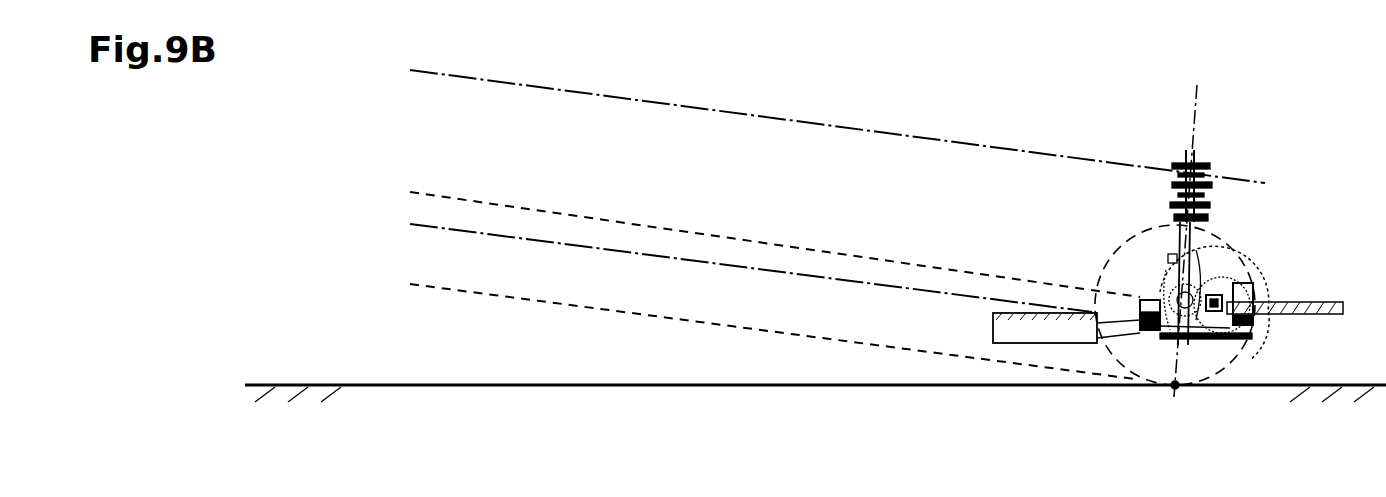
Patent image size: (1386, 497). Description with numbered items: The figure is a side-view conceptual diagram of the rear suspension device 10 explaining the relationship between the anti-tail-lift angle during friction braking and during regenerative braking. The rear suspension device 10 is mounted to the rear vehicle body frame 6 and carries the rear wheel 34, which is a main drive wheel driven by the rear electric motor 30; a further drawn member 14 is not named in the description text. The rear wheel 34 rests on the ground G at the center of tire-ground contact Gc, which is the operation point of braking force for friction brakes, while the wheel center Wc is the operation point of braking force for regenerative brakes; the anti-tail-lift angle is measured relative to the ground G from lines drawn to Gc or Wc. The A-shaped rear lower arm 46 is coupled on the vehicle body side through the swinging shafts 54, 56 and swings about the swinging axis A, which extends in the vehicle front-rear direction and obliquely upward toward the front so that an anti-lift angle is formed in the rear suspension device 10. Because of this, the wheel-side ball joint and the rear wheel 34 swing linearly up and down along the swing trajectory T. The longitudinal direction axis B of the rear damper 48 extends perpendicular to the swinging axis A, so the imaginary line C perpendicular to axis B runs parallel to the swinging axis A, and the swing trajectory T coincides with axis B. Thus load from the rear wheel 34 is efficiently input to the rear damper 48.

The rear vehicle body frame 6 is at (1318, 301).
The rear suspension device 10 is at (1256, 206).
The trailing arm 14 is at (1035, 346).
The rear electric motor 30 is at (1193, 288).
The rear wheel 34 is at (1133, 243).
The rear lower arm 46 is at (1190, 303).
The rear damper 48 is at (1123, 248).
The swinging shaft 54 is at (1141, 344).
The swinging shaft 56 is at (1255, 352).
The swinging axis A is at (875, 293).
The longitudinal direction axis B is at (1197, 128).
The imaginary line C is at (940, 138).
The ground G is at (303, 383).
The center of tire-ground contact Gc is at (1178, 387).
The swing trajectory T is at (1182, 294).
The wheel center Wc is at (1200, 330).